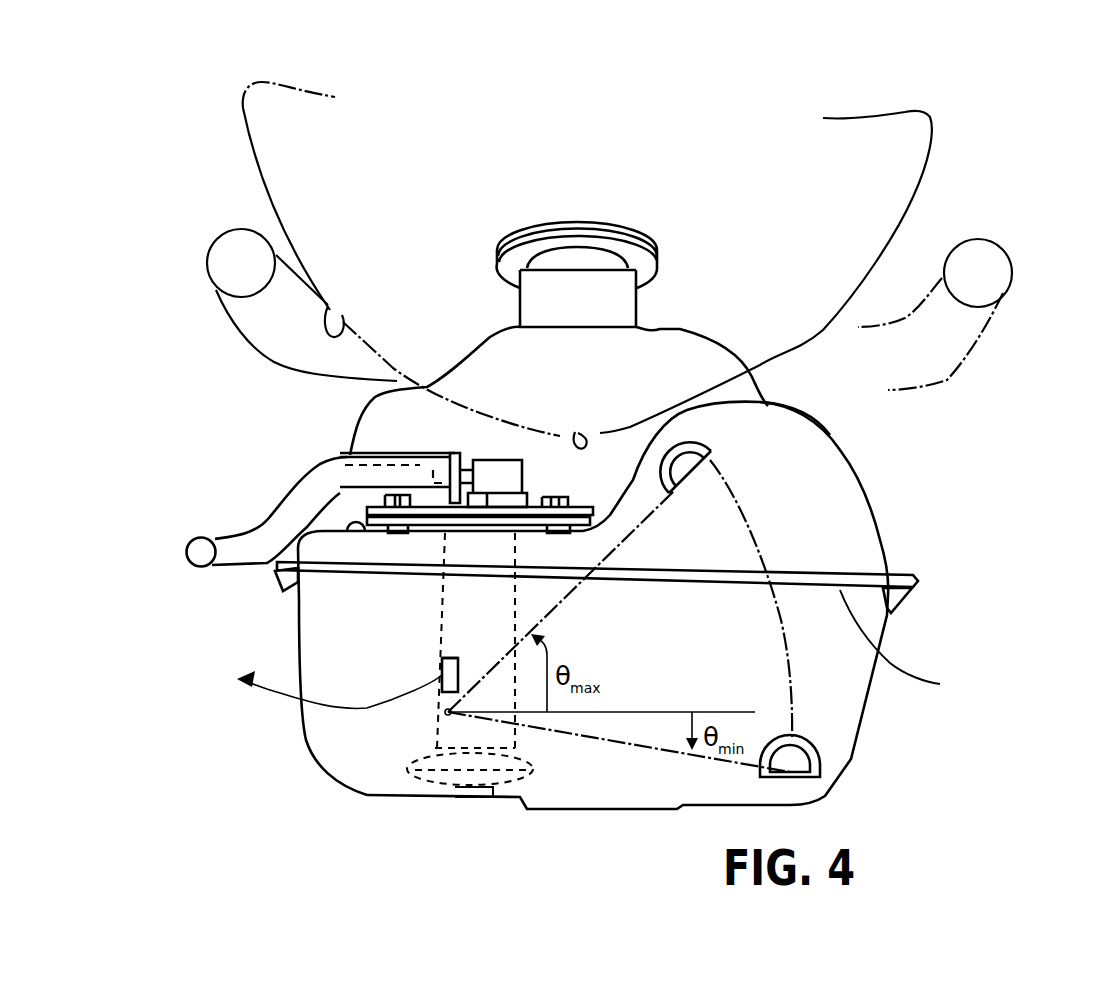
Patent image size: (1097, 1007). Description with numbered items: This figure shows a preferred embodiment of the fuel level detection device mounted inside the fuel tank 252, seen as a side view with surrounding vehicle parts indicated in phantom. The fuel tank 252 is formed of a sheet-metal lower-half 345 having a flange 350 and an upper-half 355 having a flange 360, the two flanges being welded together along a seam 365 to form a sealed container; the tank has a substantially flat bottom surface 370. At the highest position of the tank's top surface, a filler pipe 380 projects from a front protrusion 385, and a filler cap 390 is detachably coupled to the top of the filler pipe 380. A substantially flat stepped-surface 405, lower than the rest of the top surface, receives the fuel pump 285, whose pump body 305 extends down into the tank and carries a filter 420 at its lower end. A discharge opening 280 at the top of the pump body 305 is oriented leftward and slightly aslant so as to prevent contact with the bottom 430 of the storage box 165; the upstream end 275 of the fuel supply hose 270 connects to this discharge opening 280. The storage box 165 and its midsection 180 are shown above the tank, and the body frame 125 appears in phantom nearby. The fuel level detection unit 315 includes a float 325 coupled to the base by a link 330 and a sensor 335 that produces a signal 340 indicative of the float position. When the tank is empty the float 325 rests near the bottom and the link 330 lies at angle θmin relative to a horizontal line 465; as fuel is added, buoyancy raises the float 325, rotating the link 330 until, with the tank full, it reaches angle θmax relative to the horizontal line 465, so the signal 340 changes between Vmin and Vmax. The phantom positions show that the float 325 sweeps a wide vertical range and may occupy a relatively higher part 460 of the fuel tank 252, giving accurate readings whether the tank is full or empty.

The body frame 125 is at (1000, 240).
The storage box 165 is at (922, 100).
The midsection 180 is at (338, 305).
The fuel tank 252 is at (885, 429).
The fuel supply hose 270 is at (240, 540).
The upstream end 275 is at (438, 453).
The discharge opening 280 is at (323, 455).
The fuel pump 285 is at (420, 448).
The body 305 is at (437, 658).
The fuel level detection unit 315 is at (572, 758).
The float 325 is at (713, 468).
The link 330 is at (500, 640).
The sensor 335 is at (448, 657).
The signal 340 is at (300, 690).
The lower-half 345 is at (878, 697).
The flange 350 is at (898, 597).
The upper-half 355 is at (868, 490).
The flange 360 is at (906, 578).
The seam 365 is at (915, 644).
The bottom surface 370 is at (570, 814).
The filler pipe 380 is at (600, 288).
The front protrusion 385 is at (690, 330).
The filler cap 390 is at (568, 217).
The stepped-surface 405 is at (366, 531).
The filter 420 is at (413, 767).
The bottom 430 is at (575, 432).
The higher part 460 is at (793, 410).
The horizontal line 465 is at (606, 707).